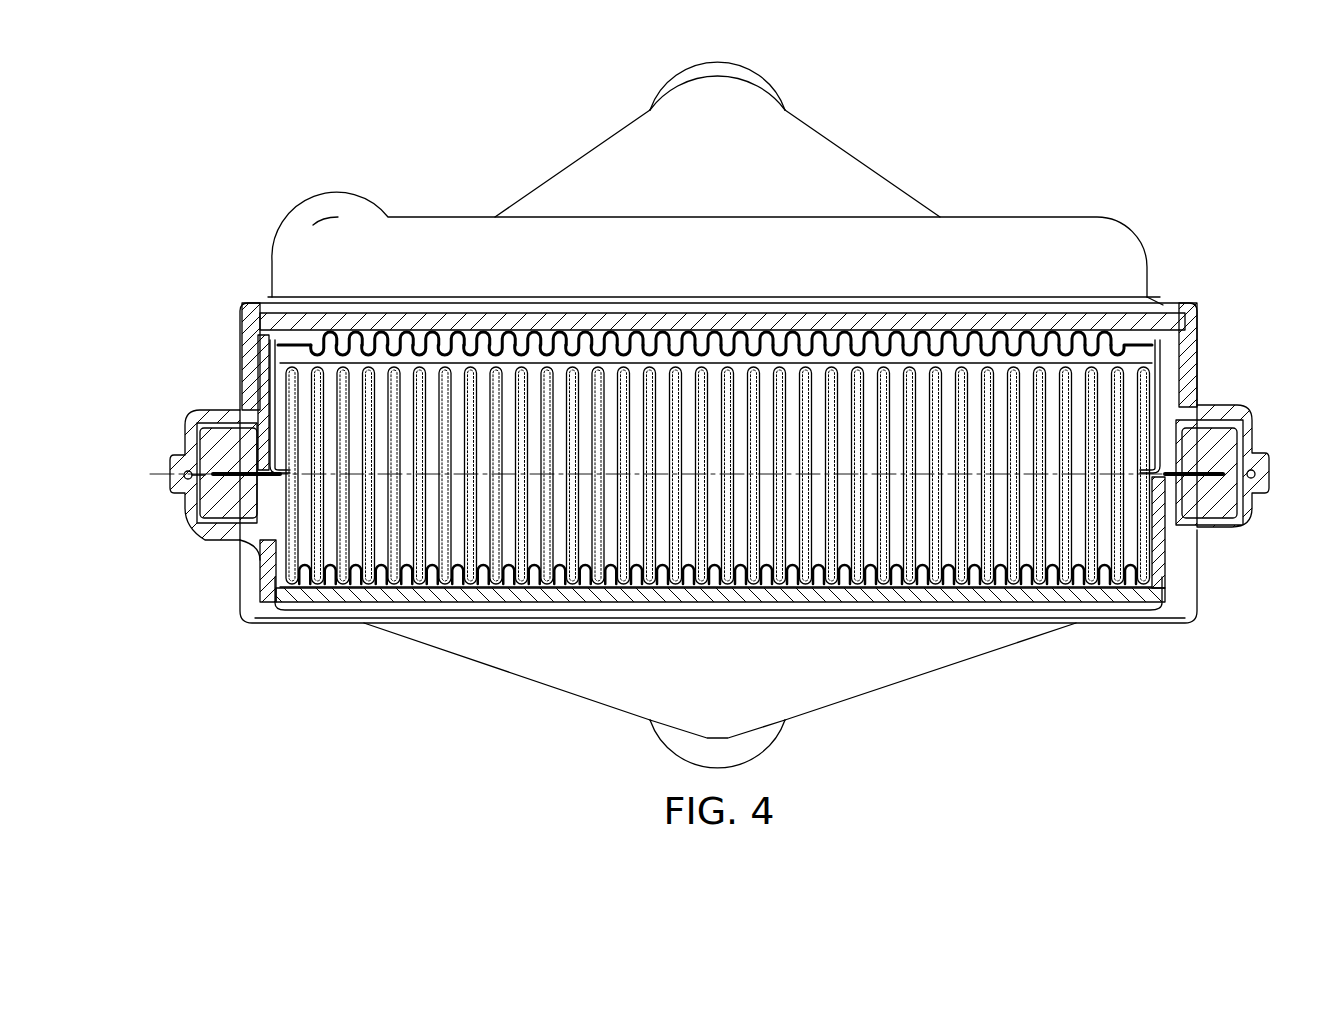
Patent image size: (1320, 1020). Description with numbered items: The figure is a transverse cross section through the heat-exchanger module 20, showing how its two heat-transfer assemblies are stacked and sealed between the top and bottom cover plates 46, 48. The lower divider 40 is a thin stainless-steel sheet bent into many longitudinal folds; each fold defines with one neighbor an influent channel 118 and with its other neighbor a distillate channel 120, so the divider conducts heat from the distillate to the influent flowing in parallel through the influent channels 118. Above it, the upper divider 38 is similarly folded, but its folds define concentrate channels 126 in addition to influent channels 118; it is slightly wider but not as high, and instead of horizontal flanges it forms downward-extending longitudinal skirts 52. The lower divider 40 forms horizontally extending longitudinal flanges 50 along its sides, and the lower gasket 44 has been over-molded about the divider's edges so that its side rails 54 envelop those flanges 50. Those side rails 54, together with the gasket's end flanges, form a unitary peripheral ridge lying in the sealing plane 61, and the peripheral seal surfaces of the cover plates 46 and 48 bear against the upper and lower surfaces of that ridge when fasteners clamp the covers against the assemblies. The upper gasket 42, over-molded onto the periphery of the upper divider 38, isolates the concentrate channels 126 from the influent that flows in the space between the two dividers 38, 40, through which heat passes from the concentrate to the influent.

The heat-exchanger module 20 is at (1003, 138).
The upper divider 38 is at (1120, 313).
The lower divider 40 is at (313, 553).
The upper gasket 42 is at (258, 366).
The lower gasket 44 is at (217, 442).
The top cover plate 46 is at (322, 311).
The bottom cover plate 48 is at (309, 603).
The longitudinal flanges 50 is at (220, 470).
The longitudinal skirts 52 is at (267, 387).
The side rails 54 is at (1247, 513).
The sealing plane 61 is at (153, 480).
The influent channels 118 is at (975, 372).
The distillate channels 120 is at (952, 588).
The concentrate channels 126 is at (423, 335).